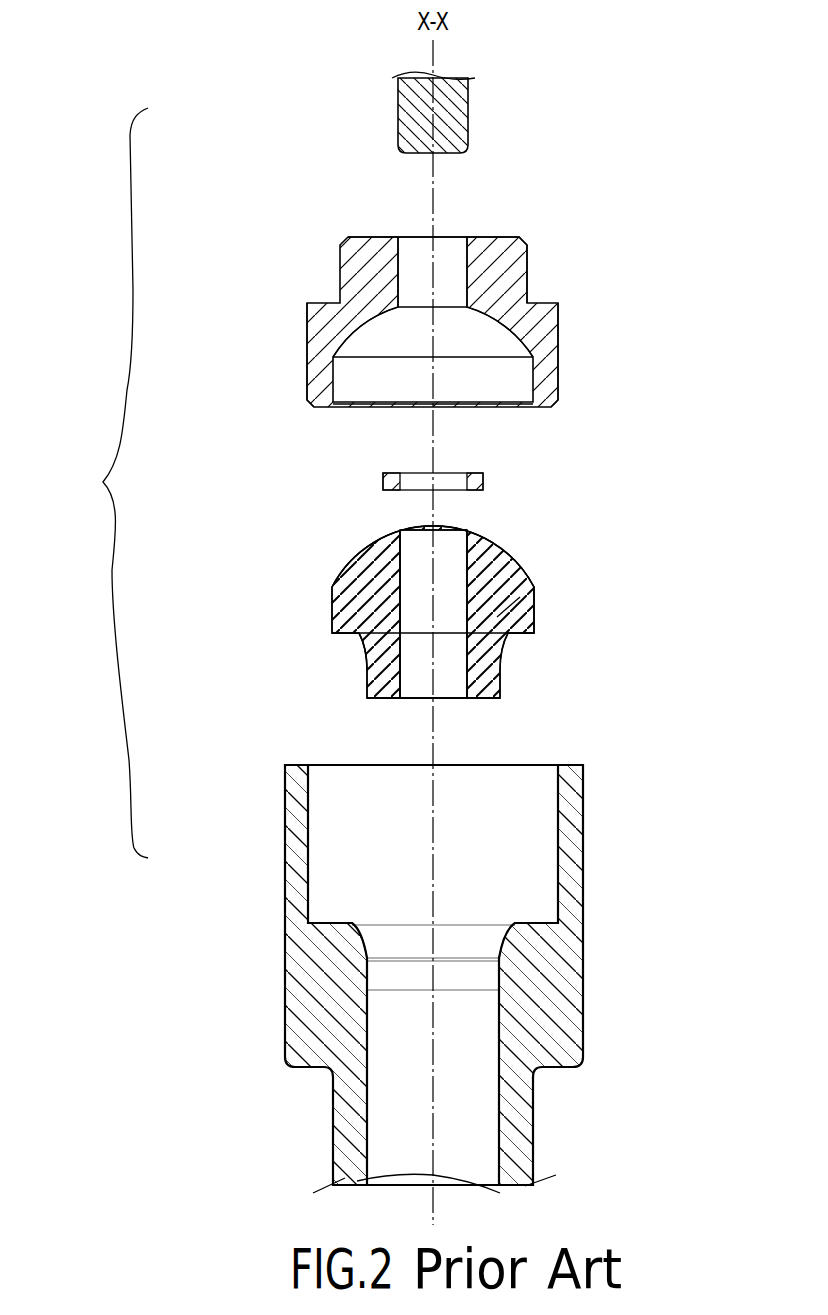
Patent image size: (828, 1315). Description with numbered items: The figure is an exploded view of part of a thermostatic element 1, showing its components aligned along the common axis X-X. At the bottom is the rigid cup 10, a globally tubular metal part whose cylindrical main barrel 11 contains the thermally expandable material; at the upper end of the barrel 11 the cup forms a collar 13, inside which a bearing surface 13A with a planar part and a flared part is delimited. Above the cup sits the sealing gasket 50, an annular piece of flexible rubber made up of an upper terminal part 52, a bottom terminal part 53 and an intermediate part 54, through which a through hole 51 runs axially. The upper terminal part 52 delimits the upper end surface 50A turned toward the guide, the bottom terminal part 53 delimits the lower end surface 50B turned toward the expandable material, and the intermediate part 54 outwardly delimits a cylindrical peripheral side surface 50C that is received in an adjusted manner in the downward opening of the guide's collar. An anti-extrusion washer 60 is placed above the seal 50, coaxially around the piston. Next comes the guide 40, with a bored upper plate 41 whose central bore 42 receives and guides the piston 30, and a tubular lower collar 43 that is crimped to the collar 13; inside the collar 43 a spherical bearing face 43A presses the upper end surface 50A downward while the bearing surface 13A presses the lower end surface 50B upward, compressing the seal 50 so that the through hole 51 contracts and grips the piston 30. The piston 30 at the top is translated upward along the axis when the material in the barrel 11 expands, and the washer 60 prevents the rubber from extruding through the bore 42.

The thermostatic element 1 is at (109, 483).
The cup 10 is at (407, 979).
The main barrel 11 is at (515, 1132).
The collar 13 is at (537, 997).
The bearing surface 13A is at (535, 917).
The piston 30 is at (381, 117).
The guide 40 is at (406, 316).
The upper plate 41 is at (507, 270).
The bore 42 is at (463, 256).
The lower collar 43 is at (550, 367).
The bearing face 43A is at (357, 336).
The sealing gasket 50 is at (383, 620).
The upper end surface 50A is at (359, 550).
The lower end surface 50B is at (347, 668).
The peripheral side surface 50C is at (543, 617).
The through hole 51 is at (450, 686).
The upper terminal part 52 is at (497, 560).
The bottom terminal part 53 is at (495, 652).
The intermediate part 54 is at (536, 598).
The anti-extrusion washer 60 is at (382, 482).